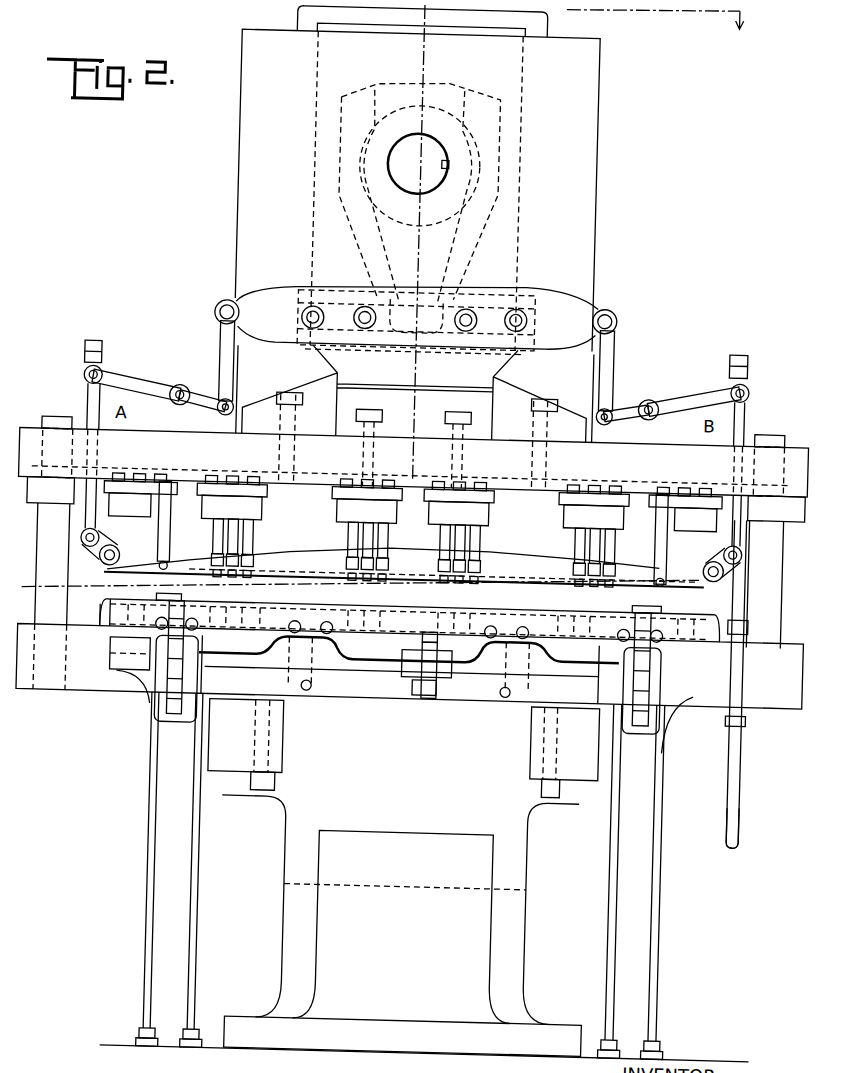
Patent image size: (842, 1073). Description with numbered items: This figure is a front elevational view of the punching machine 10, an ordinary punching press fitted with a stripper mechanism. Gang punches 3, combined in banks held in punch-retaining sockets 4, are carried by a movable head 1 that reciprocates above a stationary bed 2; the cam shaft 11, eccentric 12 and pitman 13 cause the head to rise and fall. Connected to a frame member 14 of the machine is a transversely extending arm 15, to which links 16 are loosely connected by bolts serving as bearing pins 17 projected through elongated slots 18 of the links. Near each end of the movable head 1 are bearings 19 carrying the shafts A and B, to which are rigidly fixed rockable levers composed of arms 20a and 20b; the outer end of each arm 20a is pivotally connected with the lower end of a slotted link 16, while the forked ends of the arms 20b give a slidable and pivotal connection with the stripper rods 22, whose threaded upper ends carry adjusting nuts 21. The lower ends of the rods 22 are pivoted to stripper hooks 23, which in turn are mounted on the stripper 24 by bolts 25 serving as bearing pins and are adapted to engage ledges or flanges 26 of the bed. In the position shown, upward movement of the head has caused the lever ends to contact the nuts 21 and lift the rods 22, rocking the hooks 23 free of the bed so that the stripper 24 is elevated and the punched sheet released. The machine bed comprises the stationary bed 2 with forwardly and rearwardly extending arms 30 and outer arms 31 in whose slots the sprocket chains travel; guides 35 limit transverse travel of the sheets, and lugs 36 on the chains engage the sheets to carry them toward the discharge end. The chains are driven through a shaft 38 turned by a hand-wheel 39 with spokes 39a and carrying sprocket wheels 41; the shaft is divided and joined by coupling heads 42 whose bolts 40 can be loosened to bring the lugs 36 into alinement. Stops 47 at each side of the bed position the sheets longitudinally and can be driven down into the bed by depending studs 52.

The movable head 1 is at (414, 417).
The stationary bed 2 is at (106, 682).
The punches 3 is at (204, 545).
The punch-retaining sockets 4 is at (206, 512).
The punching machine 10 is at (535, 859).
The cam shaft 11 is at (418, 164).
The eccentric 12 is at (455, 138).
The pitman 13 is at (444, 244).
The frame member 14 is at (578, 204).
The transversely extending arm 15 is at (566, 297).
The links 16 is at (218, 358).
The bearing pins 17 is at (213, 319).
The elongated slots 18 is at (214, 306).
The bearings 19 is at (170, 452).
The arm 20a is at (202, 400).
The arm 20b is at (140, 392).
The nuts 21 is at (80, 357).
The stripper rods 22 is at (84, 410).
The stripper hooks 23 is at (80, 551).
The stripper 24 is at (293, 560).
The bolts 25 is at (104, 572).
The ledges or flanges 26 is at (118, 690).
The arms 30 is at (318, 612).
The outer arms 31 is at (202, 610).
The guides 35 is at (90, 612).
The lugs 36 is at (178, 720).
The shaft 38 is at (388, 656).
The hand-wheel 39 is at (752, 716).
The spokes 39a is at (748, 806).
The bolts 40 is at (426, 634).
The sprocket wheels 41 is at (168, 710).
The heads 42 is at (443, 660).
The stops 47 is at (165, 600).
The depending studs 52 is at (158, 551).